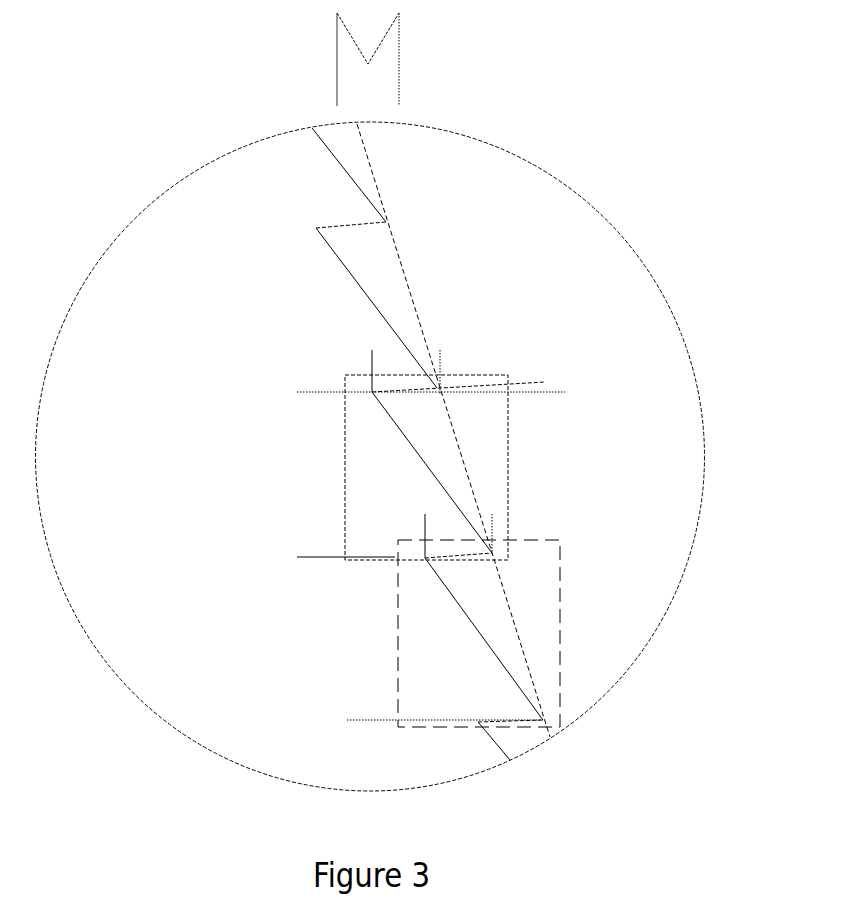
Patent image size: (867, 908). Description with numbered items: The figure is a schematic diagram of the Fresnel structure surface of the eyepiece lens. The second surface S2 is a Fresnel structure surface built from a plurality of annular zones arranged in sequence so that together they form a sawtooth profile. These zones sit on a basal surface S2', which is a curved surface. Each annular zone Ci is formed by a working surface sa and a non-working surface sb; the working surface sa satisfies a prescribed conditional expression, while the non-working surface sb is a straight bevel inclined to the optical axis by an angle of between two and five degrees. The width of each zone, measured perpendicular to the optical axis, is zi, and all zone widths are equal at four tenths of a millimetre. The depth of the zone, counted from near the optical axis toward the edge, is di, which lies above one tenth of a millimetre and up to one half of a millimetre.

The basal surface S2' is at (528, 406).
The second surface S2 is at (509, 444).
The annular zone Ci is at (525, 618).
The depth of annular zone di is at (530, 524).
The width of annular zone zi is at (375, 558).
The working surface sa is at (402, 465).
The non-working surface sb is at (402, 403).